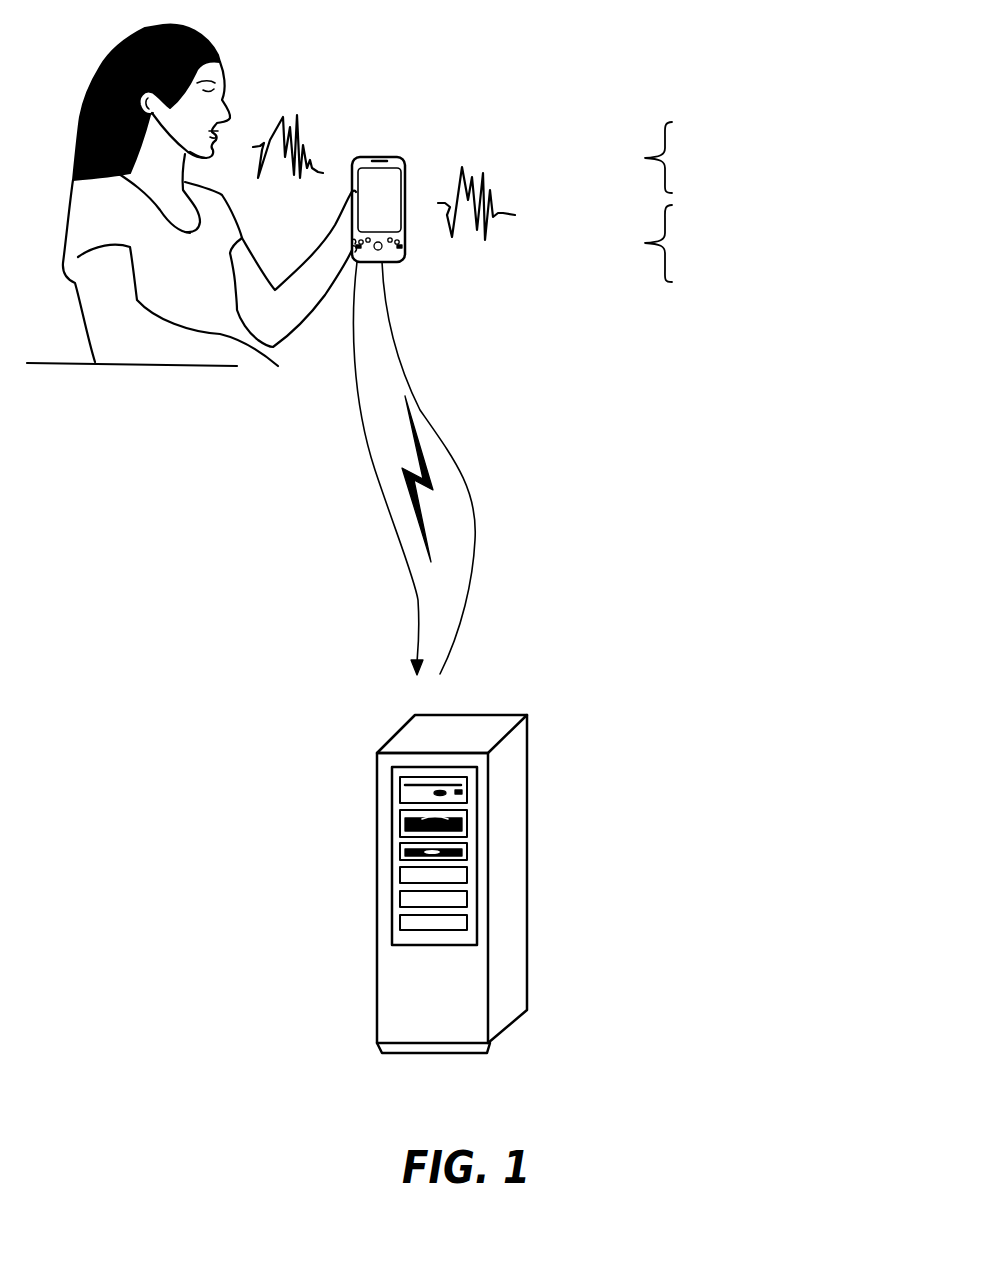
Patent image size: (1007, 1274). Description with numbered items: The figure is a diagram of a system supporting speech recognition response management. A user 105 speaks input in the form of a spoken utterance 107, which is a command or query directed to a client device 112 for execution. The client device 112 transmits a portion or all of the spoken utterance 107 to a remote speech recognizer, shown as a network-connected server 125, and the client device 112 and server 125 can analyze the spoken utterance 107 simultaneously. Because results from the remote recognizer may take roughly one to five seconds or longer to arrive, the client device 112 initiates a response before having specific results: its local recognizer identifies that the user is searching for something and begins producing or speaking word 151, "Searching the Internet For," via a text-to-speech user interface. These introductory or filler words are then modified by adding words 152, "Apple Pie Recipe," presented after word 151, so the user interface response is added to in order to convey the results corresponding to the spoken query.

The user 105 is at (112, 48).
The spoken utterance 107 is at (297, 117).
The client device 112 is at (390, 157).
The network-connected server 125 is at (400, 730).
The word 151 is at (404, 168).
The words 152 is at (404, 238).